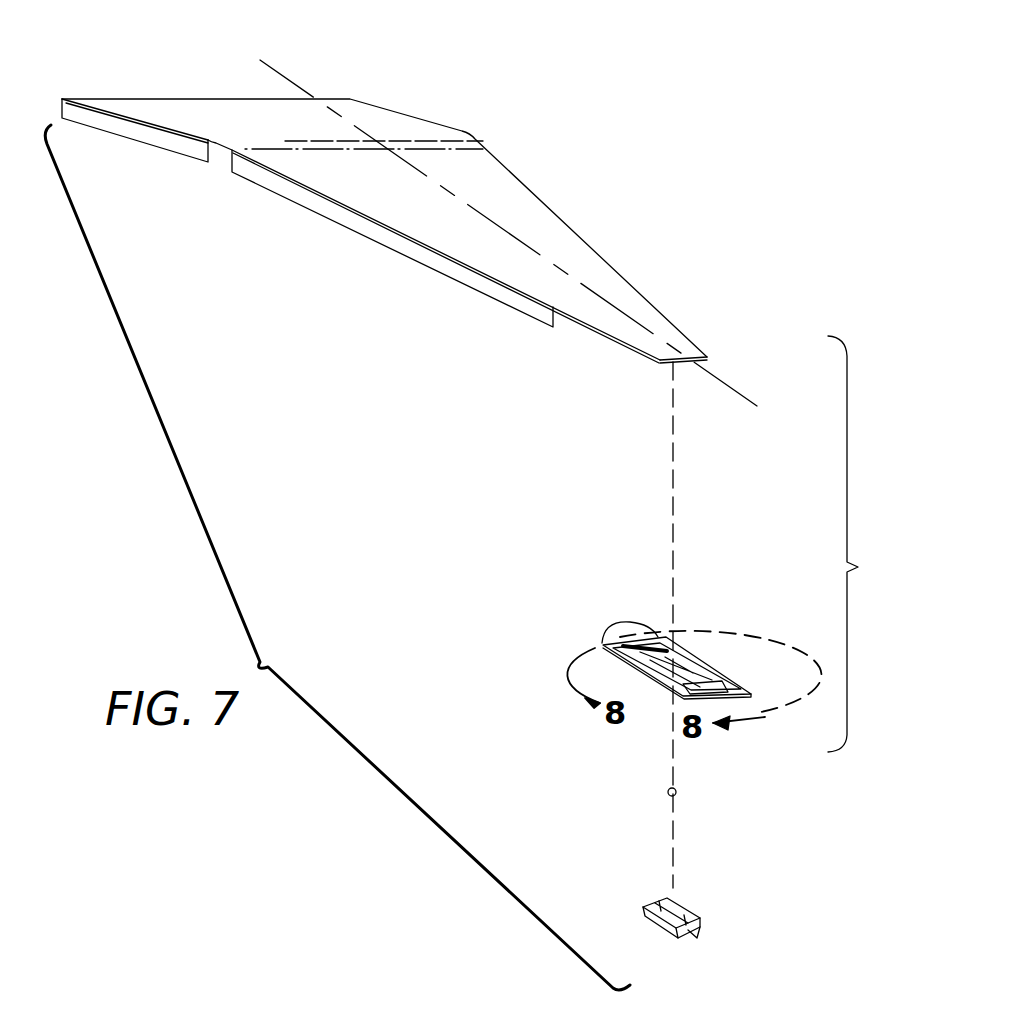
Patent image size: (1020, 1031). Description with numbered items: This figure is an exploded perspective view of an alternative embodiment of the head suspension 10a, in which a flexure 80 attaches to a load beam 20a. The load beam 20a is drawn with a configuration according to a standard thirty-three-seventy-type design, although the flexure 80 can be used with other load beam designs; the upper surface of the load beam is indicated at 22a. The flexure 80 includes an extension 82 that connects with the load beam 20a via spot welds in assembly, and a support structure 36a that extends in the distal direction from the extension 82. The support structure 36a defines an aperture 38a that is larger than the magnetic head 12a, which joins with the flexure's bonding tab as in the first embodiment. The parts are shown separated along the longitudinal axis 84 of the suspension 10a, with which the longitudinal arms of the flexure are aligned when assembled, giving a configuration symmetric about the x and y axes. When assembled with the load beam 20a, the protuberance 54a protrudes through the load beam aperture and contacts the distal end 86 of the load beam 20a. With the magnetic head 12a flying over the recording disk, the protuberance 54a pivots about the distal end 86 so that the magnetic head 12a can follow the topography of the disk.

The suspension 10a is at (874, 544).
The magnetic head 12a is at (708, 903).
The load beam 20a is at (573, 266).
The panel top surface 22a is at (390, 123).
The support structure 36a is at (717, 692).
The aperture 38a is at (622, 646).
The protuberance 54a is at (677, 790).
The flexure 80 is at (722, 657).
The extension 82 is at (613, 626).
The longitudinal axis 84 is at (727, 388).
The distal end 86 is at (681, 346).